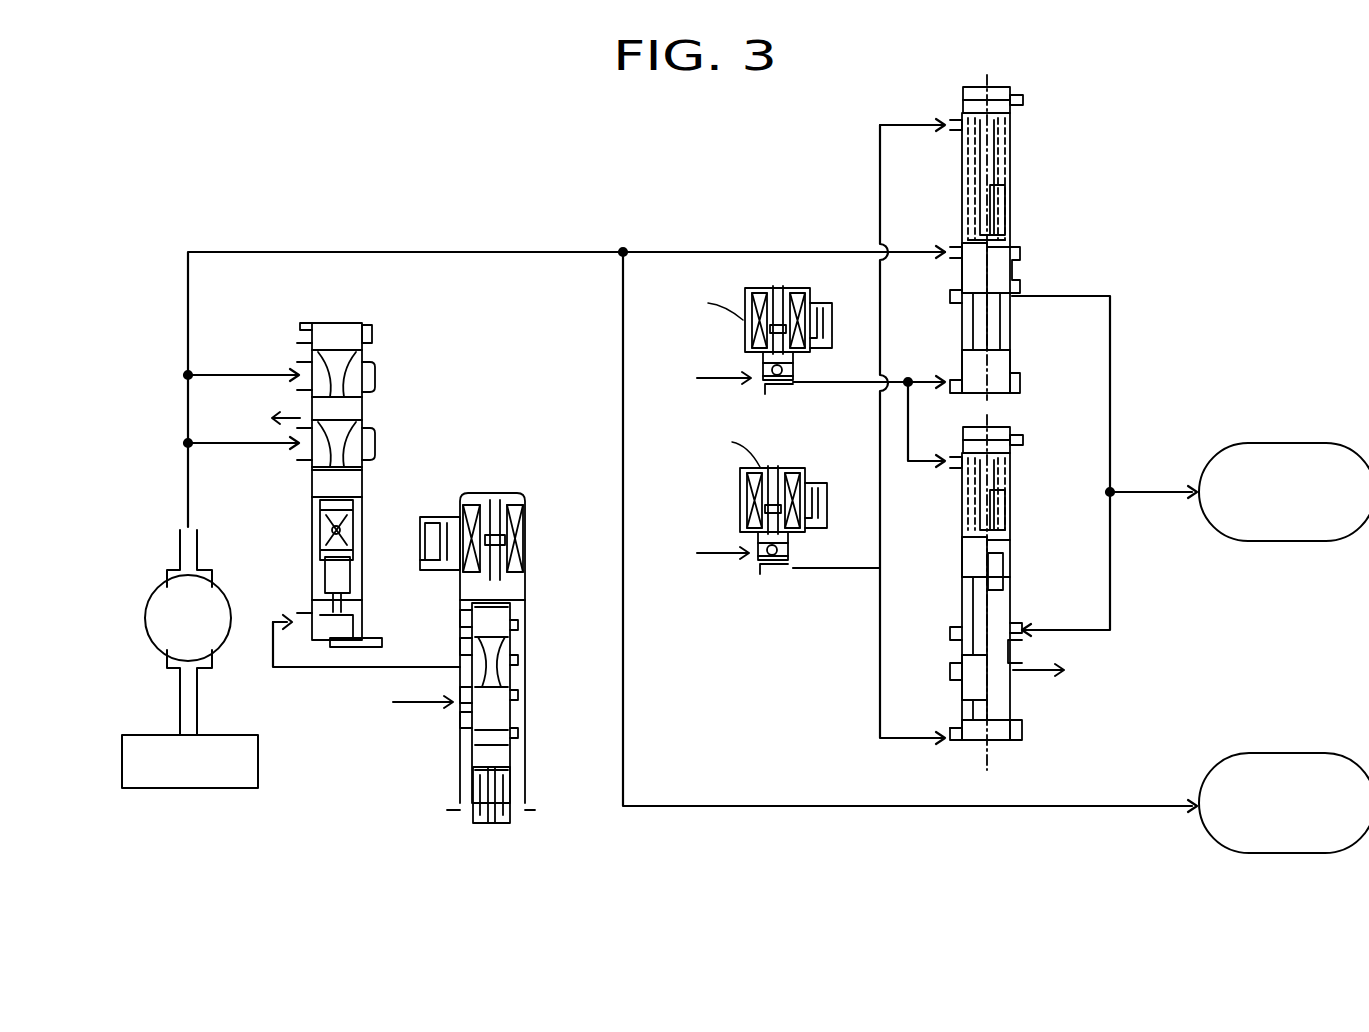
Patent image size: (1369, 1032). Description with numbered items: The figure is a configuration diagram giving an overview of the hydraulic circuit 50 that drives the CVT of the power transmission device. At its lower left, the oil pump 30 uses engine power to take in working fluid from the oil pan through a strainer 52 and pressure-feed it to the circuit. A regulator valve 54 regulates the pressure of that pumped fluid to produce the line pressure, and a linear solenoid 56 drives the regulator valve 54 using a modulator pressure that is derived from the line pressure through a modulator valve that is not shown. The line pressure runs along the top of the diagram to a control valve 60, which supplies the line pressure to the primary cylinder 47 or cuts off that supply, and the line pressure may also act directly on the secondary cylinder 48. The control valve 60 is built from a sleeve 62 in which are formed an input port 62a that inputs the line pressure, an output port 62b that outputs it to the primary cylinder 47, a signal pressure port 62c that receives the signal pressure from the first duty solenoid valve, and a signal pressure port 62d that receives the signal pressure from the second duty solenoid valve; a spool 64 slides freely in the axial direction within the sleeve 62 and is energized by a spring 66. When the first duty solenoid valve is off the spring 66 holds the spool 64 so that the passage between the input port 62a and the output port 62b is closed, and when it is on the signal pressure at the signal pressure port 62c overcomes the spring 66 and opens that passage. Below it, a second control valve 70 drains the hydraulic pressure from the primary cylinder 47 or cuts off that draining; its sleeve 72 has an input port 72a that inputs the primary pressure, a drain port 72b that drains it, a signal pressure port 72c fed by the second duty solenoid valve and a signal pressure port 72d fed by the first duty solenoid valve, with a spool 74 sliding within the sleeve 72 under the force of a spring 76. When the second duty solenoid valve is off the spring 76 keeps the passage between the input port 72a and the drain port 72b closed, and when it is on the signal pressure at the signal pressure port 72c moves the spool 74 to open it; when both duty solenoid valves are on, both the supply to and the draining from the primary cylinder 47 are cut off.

The oil pump 30 is at (162, 585).
The primary cylinder 47 is at (1283, 541).
The secondary cylinder 48 is at (1283, 853).
The hydraulic circuit 50 is at (383, 220).
The strainer 52 is at (170, 733).
The regulator valve 54 is at (363, 416).
The linear solenoid 56 is at (527, 513).
The control valve 60 is at (1033, 78).
The sleeve 62 is at (1012, 353).
The input port 62a is at (950, 245).
The output port 62b is at (1017, 290).
The signal pressure port 62c is at (950, 375).
The signal pressure port 62d is at (948, 120).
The spool 64 is at (972, 278).
The spring 66 is at (1012, 170).
The control valve 70 is at (1036, 422).
The sleeve 72 is at (1012, 707).
The input port 72a is at (1012, 623).
The drain port 72b is at (1012, 680).
The signal pressure port 72c is at (953, 728).
The signal pressure port 72d is at (953, 457).
The spool 74 is at (970, 556).
The spring 76 is at (1012, 487).